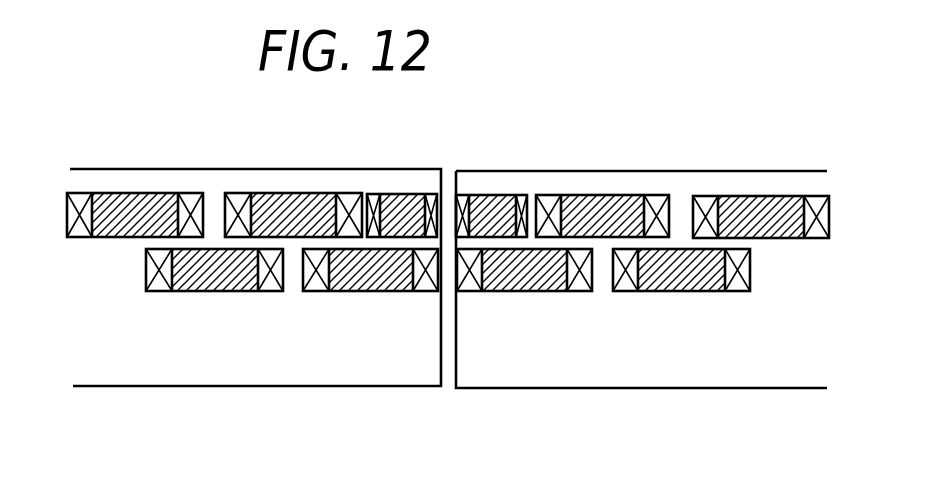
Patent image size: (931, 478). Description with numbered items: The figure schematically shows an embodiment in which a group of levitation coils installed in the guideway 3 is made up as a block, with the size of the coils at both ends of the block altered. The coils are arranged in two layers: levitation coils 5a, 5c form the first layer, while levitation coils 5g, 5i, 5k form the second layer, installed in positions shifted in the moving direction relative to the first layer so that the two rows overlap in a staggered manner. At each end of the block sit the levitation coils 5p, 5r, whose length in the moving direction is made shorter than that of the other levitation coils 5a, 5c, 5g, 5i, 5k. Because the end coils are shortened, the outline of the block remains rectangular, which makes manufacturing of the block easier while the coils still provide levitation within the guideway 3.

The guideway 3 is at (695, 387).
The levitation coil 5a is at (113, 192).
The levitation coil 5c is at (276, 193).
The levitation coil 5p is at (408, 193).
The levitation coil 5r is at (490, 194).
The levitation coil 5g is at (202, 292).
The levitation coil 5i is at (365, 292).
The levitation coil 5k is at (515, 293).